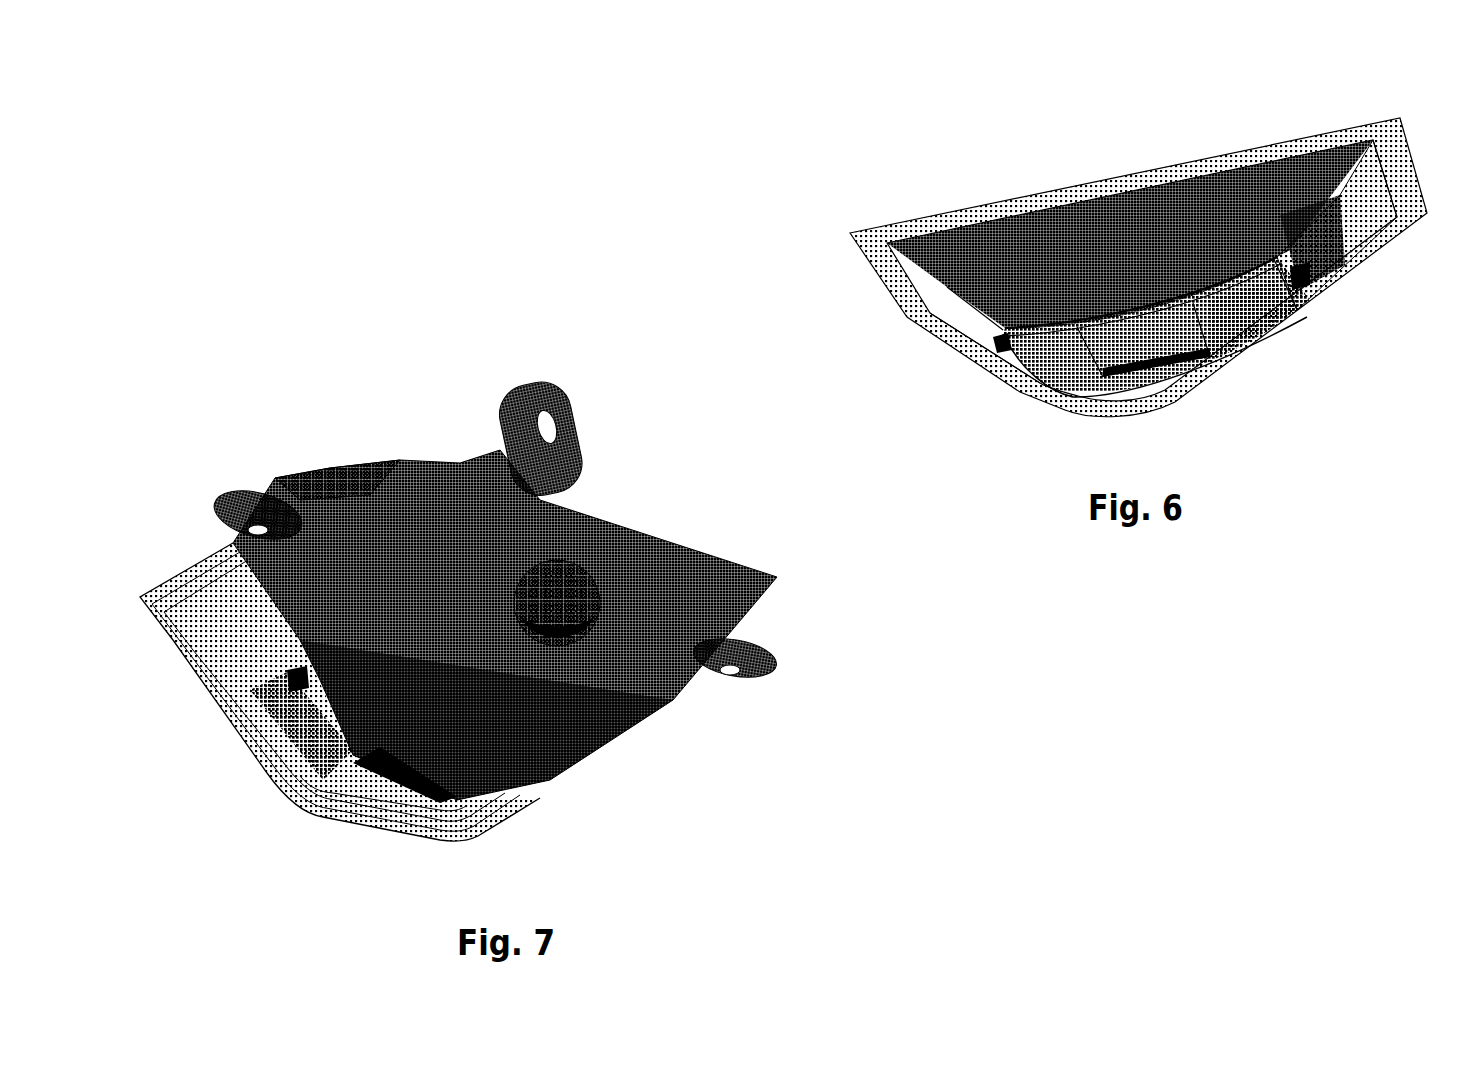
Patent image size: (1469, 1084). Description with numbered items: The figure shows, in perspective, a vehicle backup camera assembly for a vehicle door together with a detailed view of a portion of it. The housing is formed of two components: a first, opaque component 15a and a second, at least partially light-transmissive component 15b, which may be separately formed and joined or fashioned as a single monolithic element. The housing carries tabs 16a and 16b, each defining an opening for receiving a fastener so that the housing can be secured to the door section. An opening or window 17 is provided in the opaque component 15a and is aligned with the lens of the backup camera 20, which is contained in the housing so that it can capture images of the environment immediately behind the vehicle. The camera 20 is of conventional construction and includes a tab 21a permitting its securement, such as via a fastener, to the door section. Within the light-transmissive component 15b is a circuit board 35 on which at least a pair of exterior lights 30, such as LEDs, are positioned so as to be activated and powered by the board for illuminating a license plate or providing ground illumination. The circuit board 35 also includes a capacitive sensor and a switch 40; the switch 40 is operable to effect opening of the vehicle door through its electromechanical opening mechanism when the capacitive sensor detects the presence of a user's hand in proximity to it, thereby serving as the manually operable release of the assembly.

In FIG. 7, the opaque component 15a is at (640, 547).
In FIG. 6, the light-transmissive component 15b is at (992, 200).
In FIG. 7, the light-transmissive component 15b is at (273, 777).
In FIG. 7, the tab 16a is at (225, 497).
In FIG. 7, the tab 16b is at (775, 664).
In FIG. 7, the opening or window 17 is at (556, 630).
In FIG. 7, the backup camera 20 is at (335, 455).
In FIG. 7, the tab 21a is at (520, 388).
In FIG. 6, the exterior light 30 is at (1005, 328).
In FIG. 7, the exterior light 30 is at (287, 680).
In FIG. 6, the circuit board 35 is at (1273, 327).
In FIG. 7, the circuit board 35 is at (327, 750).
In FIG. 6, the switch 40 is at (1170, 362).
In FIG. 7, the switch 40 is at (417, 790).